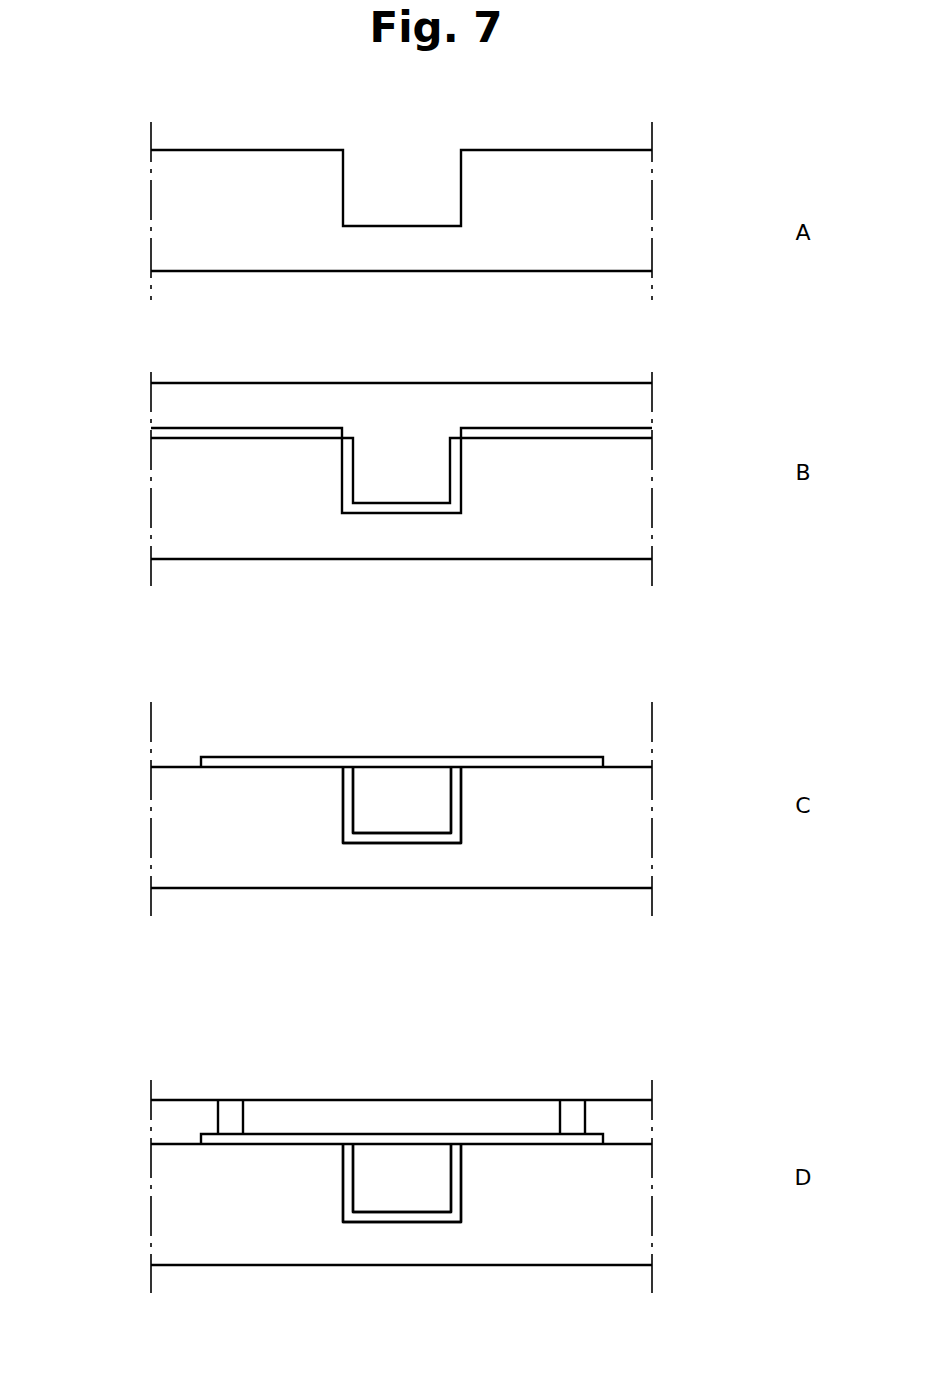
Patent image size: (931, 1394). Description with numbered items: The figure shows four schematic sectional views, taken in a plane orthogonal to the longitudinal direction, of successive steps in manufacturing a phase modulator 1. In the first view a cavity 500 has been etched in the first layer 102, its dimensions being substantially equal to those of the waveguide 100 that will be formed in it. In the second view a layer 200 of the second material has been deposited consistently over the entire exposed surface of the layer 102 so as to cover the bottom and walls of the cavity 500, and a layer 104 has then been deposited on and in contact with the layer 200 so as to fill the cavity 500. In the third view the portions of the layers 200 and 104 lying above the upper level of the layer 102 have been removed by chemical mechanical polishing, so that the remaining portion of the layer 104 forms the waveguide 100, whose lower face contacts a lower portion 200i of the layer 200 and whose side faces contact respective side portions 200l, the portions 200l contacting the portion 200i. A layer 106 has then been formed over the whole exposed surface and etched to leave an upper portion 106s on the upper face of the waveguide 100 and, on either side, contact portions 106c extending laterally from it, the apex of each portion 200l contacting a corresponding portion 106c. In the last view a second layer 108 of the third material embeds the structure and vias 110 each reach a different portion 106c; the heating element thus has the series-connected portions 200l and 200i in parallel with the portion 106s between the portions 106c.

The modulator 1 is at (160, 1052).
The waveguide 100 is at (421, 811).
The first layer 102 is at (627, 227).
The layer 104 is at (637, 411).
The layer 106 is at (620, 756).
The contact portions 106c is at (297, 762).
The upper portion 106s is at (410, 763).
The second layer 108 is at (640, 1120).
The vias 110 is at (230, 1100).
The layer 200 is at (660, 432).
The side portions 200l is at (348, 805).
The lower portion 200i is at (396, 838).
The cavity 500 is at (395, 170).